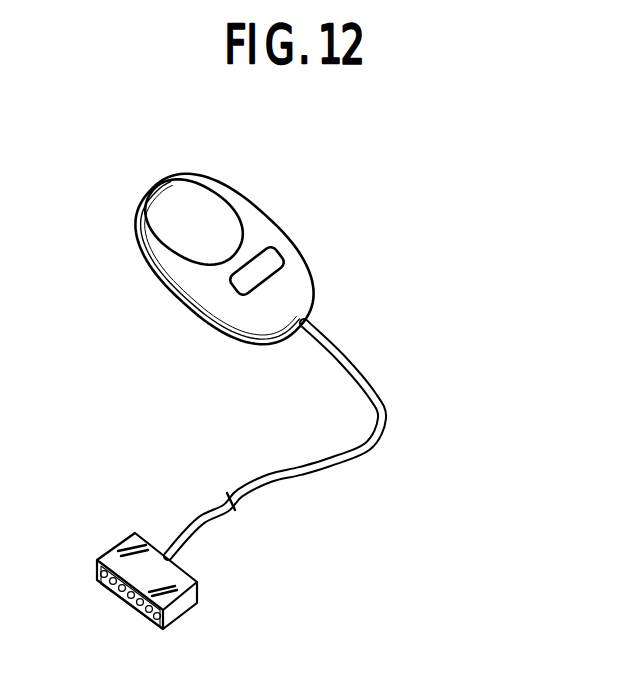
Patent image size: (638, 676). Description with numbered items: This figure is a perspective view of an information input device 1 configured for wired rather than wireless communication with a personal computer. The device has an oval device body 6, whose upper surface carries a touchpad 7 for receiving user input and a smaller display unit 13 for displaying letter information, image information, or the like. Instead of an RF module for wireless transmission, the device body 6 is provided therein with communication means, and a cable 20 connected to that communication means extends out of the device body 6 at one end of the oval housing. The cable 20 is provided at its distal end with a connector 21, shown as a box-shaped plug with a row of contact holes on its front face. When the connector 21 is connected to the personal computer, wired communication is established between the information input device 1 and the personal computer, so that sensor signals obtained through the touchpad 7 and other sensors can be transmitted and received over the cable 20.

The information input device 1 is at (234, 225).
The device body 6 is at (200, 280).
The touchpad 7 is at (207, 208).
The display unit 13 is at (283, 257).
The cable 20 is at (283, 467).
The connector 21 is at (135, 533).